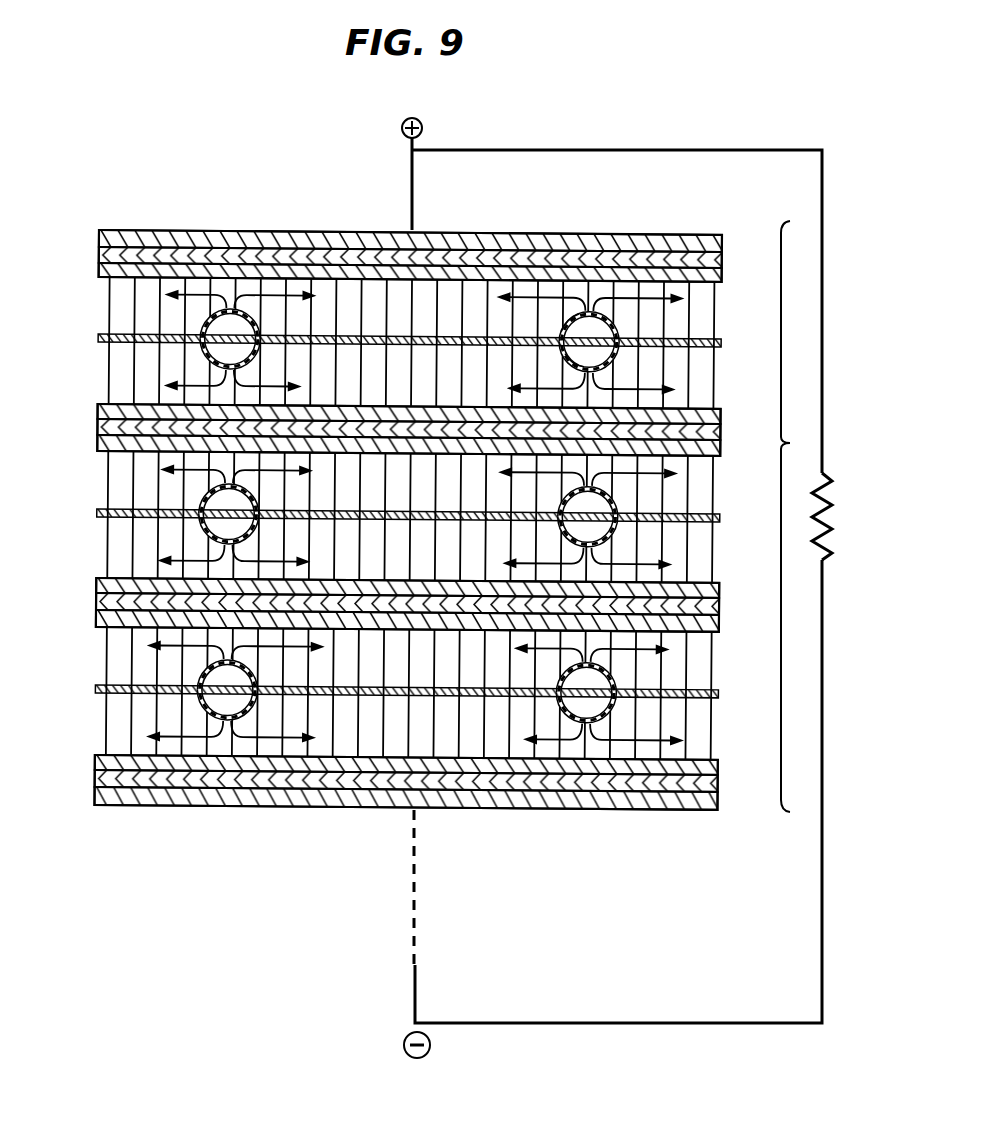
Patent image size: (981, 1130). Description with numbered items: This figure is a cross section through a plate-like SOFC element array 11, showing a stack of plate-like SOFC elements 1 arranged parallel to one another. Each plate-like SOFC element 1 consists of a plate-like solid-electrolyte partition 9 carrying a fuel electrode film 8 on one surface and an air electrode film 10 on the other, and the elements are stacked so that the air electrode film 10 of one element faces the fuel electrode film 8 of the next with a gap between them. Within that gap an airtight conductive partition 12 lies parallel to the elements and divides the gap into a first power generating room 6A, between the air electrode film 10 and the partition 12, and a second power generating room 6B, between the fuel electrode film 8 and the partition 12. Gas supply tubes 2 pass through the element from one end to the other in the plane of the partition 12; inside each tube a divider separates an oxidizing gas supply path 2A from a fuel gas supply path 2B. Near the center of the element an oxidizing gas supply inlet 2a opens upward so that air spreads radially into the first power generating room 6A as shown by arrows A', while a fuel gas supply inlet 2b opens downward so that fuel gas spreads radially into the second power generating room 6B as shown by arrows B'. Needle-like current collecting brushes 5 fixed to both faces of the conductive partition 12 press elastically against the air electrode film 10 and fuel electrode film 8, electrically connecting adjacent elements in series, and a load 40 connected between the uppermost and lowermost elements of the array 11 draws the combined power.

The plate-like SOFC element 1 is at (678, 233).
The gas supply tube 2 is at (243, 740).
The oxidizing gas supply path 2A is at (212, 670).
The fuel gas supply path 2B is at (205, 704).
The oxidizing gas supply inlet 2a is at (567, 322).
The fuel gas supply inlet 2b is at (565, 358).
The needle-like current collecting brush 5 is at (157, 300).
The first power generating room 6A is at (700, 311).
The second power generating room 6B is at (698, 381).
The fuel electrode film 8 is at (99, 236).
The plate-like solid-electrolyte partition 9 is at (99, 255).
The air electrode film 10 is at (99, 270).
The SOFC element array 11 is at (797, 516).
The airtight conductive partition 12 is at (725, 343).
The load 40 is at (838, 519).
The arrow A' is at (424, 247).
The arrow B' is at (415, 788).